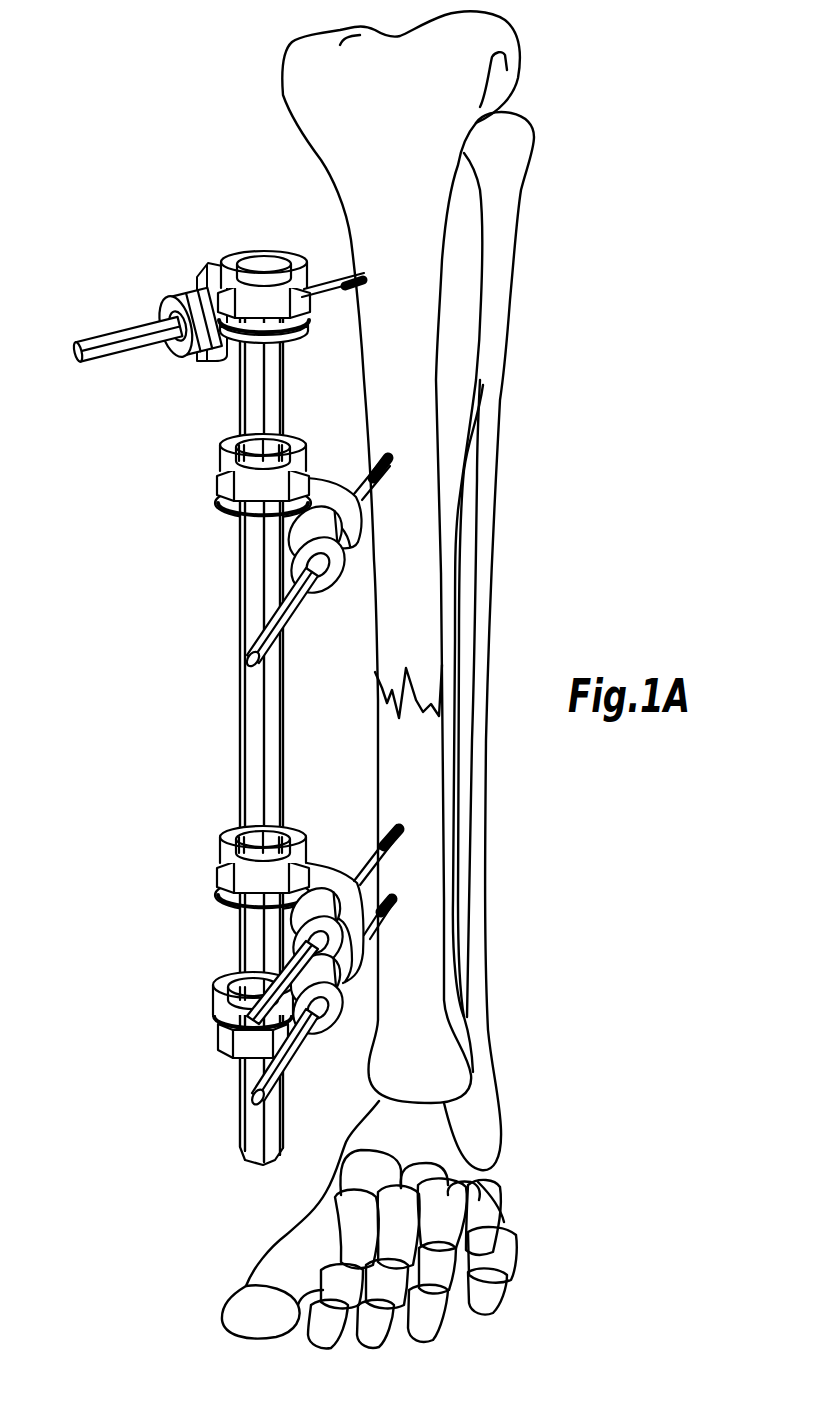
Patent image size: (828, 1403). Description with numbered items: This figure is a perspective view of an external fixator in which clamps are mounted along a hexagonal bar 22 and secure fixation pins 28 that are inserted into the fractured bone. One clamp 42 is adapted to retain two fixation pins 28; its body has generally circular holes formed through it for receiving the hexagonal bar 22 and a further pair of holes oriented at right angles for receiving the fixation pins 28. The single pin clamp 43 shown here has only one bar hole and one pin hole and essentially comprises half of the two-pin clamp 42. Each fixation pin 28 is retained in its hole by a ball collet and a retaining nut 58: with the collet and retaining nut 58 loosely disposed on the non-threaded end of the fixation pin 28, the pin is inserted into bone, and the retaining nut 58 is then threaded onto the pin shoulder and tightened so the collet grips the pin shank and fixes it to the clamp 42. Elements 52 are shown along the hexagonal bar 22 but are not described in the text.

The hexagonal bar 22 is at (260, 218).
The fixation pin 28 is at (140, 327).
The clamp 42 is at (217, 903).
The single pin clamp 43 is at (220, 483).
The locking nuts 52 is at (240, 252).
The retaining nut 58 is at (177, 357).